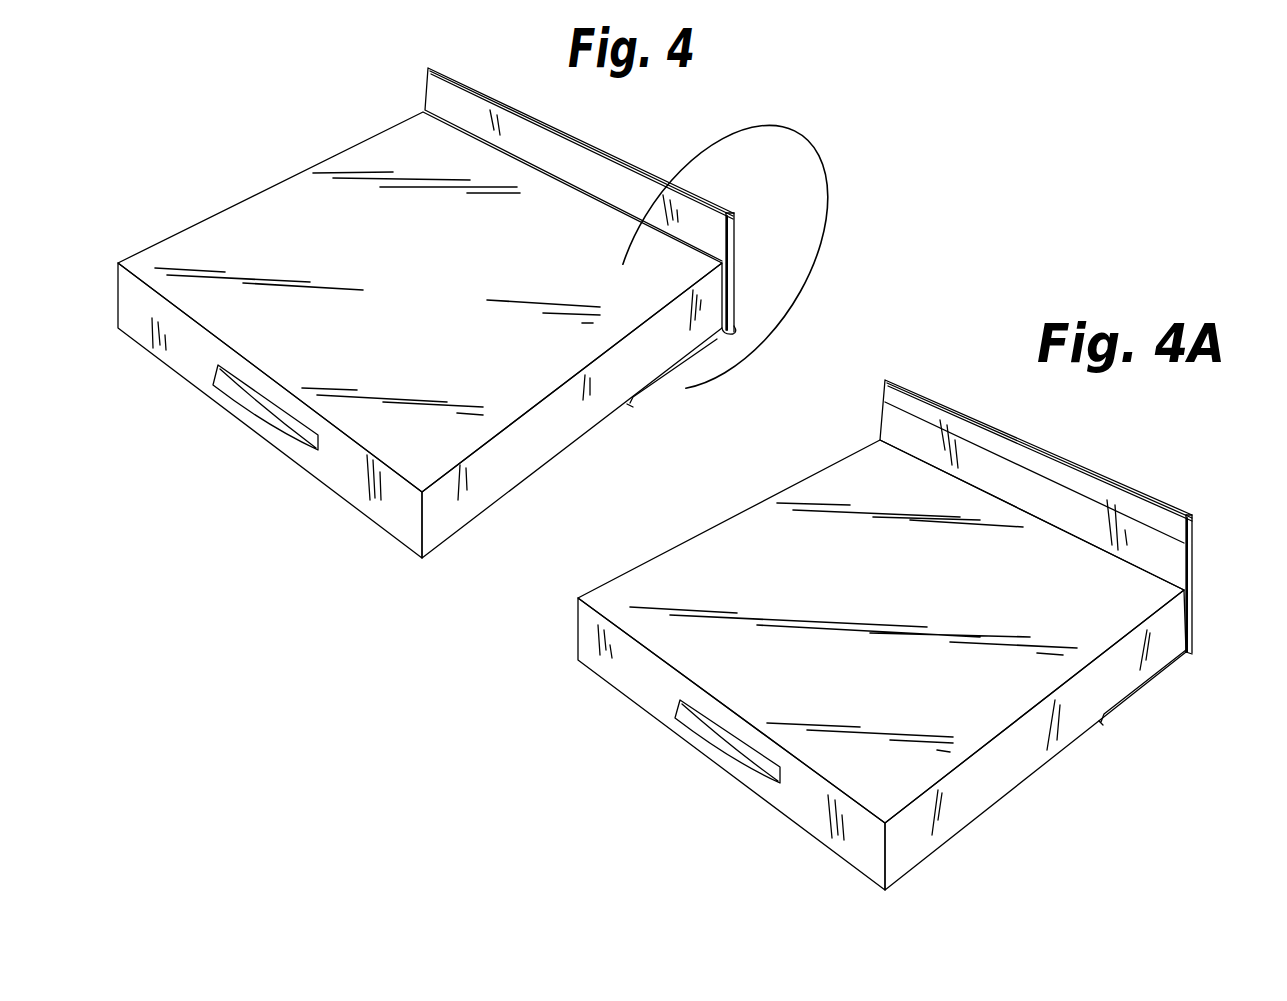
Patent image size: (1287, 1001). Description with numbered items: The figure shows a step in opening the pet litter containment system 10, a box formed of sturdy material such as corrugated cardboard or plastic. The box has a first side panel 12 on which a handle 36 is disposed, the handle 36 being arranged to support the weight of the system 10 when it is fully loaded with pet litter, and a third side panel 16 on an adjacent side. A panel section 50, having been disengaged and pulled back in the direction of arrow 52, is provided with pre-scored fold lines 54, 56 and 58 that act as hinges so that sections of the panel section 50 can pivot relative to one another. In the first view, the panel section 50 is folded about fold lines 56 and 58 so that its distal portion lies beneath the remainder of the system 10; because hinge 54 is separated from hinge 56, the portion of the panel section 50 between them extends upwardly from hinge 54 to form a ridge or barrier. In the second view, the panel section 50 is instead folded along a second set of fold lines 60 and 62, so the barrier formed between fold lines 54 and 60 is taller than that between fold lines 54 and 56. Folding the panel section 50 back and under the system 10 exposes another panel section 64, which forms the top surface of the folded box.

In FIG. 4, the pet litter containment system 10 is at (270, 136).
In FIG. 4A, the pet litter containment system 10 is at (740, 487).
In FIG. 4, the first side panel 12 is at (393, 513).
In FIG. 4A, the first side panel 12 is at (617, 663).
In FIG. 4, the third side panel 16 is at (500, 473).
In FIG. 4A, the third side panel 16 is at (965, 803).
In FIG. 4, the handle 36 is at (280, 432).
In FIG. 4A, the handle 36 is at (717, 750).
In FIG. 4, the panel section 50 is at (740, 275).
In FIG. 4A, the panel section 50 is at (1199, 567).
In FIG. 4, the arrow 52 is at (826, 181).
In FIG. 4, the fold line 54 is at (582, 190).
In FIG. 4, the fold line 56 is at (683, 197).
In FIG. 4A, the fold line 56 is at (1027, 470).
In FIG. 4, the fold line 58 is at (735, 334).
In FIG. 4A, the fold line 58 is at (1190, 625).
In FIG. 4, the fold line 60 is at (730, 253).
In FIG. 4A, the fold line 60 is at (1143, 494).
In FIG. 4, the fold line 62 is at (674, 385).
In FIG. 4A, the fold line 62 is at (1193, 653).
In FIG. 4, the panel section 64 is at (436, 258).
In FIG. 4A, the panel section 64 is at (906, 603).